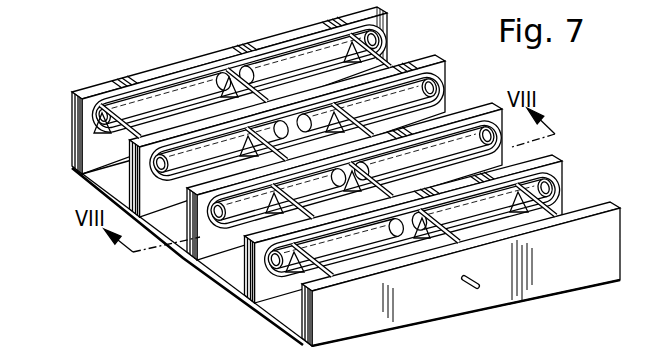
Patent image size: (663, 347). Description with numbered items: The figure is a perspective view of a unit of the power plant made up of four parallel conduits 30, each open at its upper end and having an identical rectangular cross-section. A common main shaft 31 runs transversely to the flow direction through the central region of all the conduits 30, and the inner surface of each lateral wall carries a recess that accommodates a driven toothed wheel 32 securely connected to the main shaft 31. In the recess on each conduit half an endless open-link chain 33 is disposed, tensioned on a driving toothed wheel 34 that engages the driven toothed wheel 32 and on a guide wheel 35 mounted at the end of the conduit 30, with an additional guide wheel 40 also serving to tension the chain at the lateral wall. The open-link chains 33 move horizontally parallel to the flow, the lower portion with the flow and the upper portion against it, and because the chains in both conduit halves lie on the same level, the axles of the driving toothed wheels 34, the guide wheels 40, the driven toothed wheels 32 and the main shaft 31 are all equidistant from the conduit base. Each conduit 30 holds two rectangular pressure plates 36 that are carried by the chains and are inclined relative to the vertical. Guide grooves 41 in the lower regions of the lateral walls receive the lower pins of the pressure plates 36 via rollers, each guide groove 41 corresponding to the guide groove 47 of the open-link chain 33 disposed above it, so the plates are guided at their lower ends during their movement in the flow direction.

The conduit 30 is at (108, 177).
The main shaft 31 is at (462, 282).
The driven toothed wheel 32 is at (202, 55).
The endless open-link chain 33 is at (160, 83).
The driving toothed wheel 34 is at (232, 50).
The guide wheel 35 is at (92, 112).
The pressure plate 36 is at (114, 99).
The guide wheel 40 is at (380, 38).
The guide groove 41 is at (83, 151).
The guide groove 47 is at (92, 123).